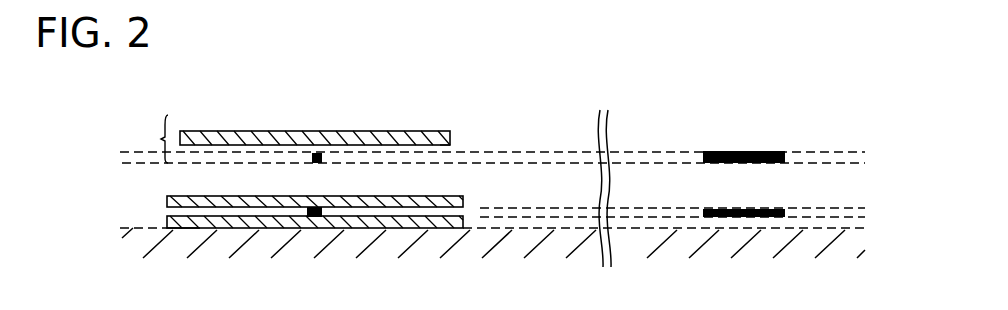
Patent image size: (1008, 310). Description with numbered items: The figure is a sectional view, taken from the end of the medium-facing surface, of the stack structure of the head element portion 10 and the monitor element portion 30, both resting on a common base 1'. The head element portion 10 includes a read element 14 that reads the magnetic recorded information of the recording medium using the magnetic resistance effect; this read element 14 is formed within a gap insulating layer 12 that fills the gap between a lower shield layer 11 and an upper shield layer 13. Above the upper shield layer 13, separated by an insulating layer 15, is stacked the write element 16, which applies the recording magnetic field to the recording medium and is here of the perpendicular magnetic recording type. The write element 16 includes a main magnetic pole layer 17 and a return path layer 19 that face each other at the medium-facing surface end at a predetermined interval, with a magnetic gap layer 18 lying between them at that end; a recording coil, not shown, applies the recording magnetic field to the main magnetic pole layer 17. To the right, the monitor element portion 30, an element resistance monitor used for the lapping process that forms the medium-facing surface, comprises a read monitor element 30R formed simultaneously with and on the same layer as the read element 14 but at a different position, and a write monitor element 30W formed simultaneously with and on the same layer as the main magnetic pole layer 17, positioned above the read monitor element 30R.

The substrate/ground 1' is at (472, 244).
The head element portion 10 is at (319, 71).
The lower shield layer 11 is at (165, 218).
The gap insulating layer 12 is at (165, 212).
The upper shield layer 13 is at (165, 198).
The read element 14 is at (315, 217).
The insulating layer 15 is at (175, 183).
The write element 16 is at (151, 139).
The main magnetic pole layer 17 is at (327, 152).
The magnetic gap layer 18 is at (450, 147).
The return path layer 19 is at (430, 137).
The monitor element portion 30 is at (760, 115).
The write monitor element 30W is at (775, 152).
The read monitor element 30R is at (775, 208).